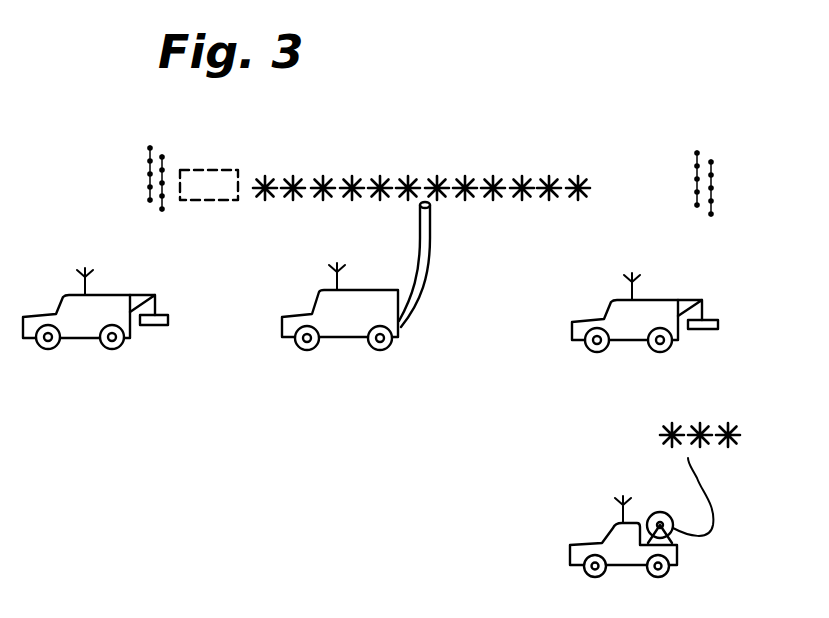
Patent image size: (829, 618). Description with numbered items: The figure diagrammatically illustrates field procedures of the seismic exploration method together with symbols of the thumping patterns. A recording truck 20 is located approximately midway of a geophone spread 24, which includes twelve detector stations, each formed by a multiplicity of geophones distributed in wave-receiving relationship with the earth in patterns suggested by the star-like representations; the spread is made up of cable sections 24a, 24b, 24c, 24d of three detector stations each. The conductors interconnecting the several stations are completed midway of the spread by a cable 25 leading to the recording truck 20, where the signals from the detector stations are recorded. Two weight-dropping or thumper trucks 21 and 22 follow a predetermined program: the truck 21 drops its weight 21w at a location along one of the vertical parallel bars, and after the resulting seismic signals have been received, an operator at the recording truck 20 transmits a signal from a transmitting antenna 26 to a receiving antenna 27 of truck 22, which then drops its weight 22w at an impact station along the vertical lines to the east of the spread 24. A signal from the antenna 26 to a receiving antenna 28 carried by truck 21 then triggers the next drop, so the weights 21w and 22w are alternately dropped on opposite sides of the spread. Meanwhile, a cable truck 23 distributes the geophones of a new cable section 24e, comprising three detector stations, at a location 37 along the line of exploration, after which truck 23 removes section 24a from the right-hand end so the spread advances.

The recording truck 20 is at (366, 290).
The thumper truck 21 is at (118, 292).
The weight 21w is at (167, 322).
The thumper truck 22 is at (659, 298).
The weight 22w is at (711, 325).
The cable truck 23 is at (615, 535).
The geophone spread 24 is at (443, 129).
The cable section 24a is at (589, 173).
The cable section 24b is at (503, 173).
The cable section 24c is at (418, 173).
The cable section 24d is at (332, 173).
The cable section 24e is at (743, 418).
The cable 25 is at (424, 243).
The transmitting antenna 26 is at (329, 272).
The receiving antenna 27 is at (625, 283).
The receiving antenna 28 is at (76, 276).
The location 37 is at (208, 170).